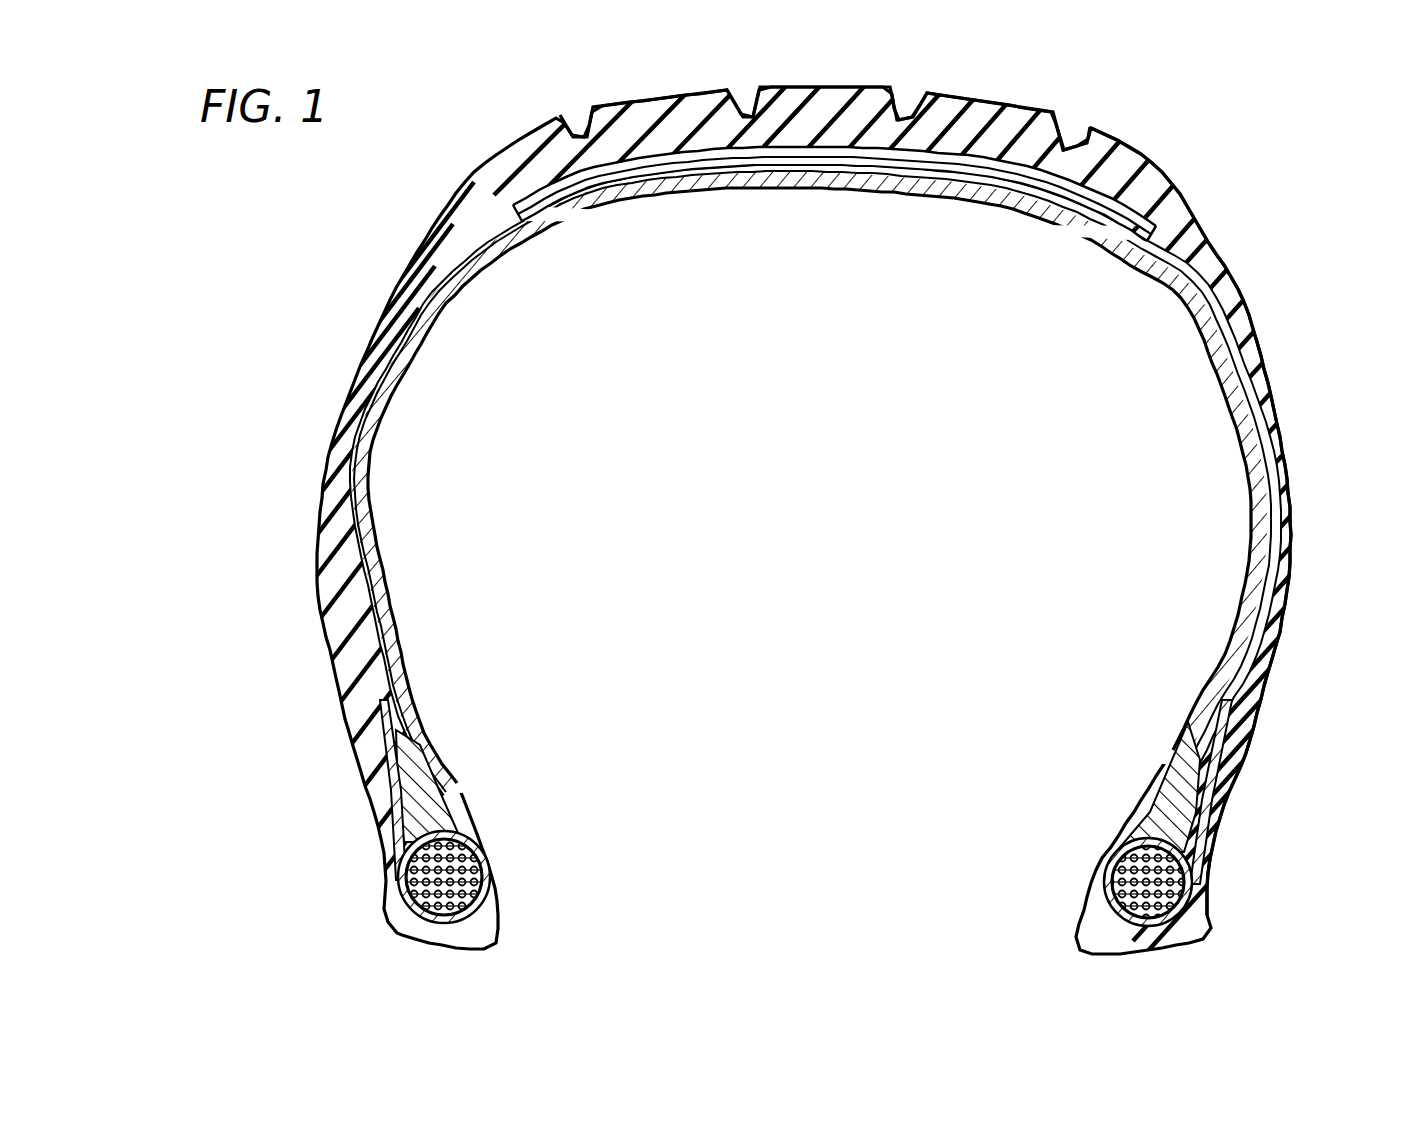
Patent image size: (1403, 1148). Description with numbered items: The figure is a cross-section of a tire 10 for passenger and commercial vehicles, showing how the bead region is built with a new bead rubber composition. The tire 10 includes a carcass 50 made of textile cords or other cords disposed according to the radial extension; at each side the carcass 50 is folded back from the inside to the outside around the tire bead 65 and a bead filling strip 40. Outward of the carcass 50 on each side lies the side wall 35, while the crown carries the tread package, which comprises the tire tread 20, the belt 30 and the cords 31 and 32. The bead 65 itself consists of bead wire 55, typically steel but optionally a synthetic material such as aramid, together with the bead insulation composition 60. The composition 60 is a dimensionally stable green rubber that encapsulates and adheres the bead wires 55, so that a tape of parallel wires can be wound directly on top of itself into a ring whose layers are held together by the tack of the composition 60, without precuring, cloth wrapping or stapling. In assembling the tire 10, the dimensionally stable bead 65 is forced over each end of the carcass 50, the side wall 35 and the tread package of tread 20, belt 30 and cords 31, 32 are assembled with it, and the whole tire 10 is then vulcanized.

The tire 10 is at (420, 216).
The tire tread 20 is at (807, 115).
The belt 30 is at (1135, 207).
The cord 31 is at (618, 176).
The cord 32 is at (704, 152).
The side wall 35 is at (1268, 424).
The bead filling strip 40 is at (1197, 801).
The carcass 50 is at (371, 651).
The bead wire 55 is at (1183, 883).
The bead insulation composition 60 is at (1163, 847).
The tire bead 65 is at (1120, 846).